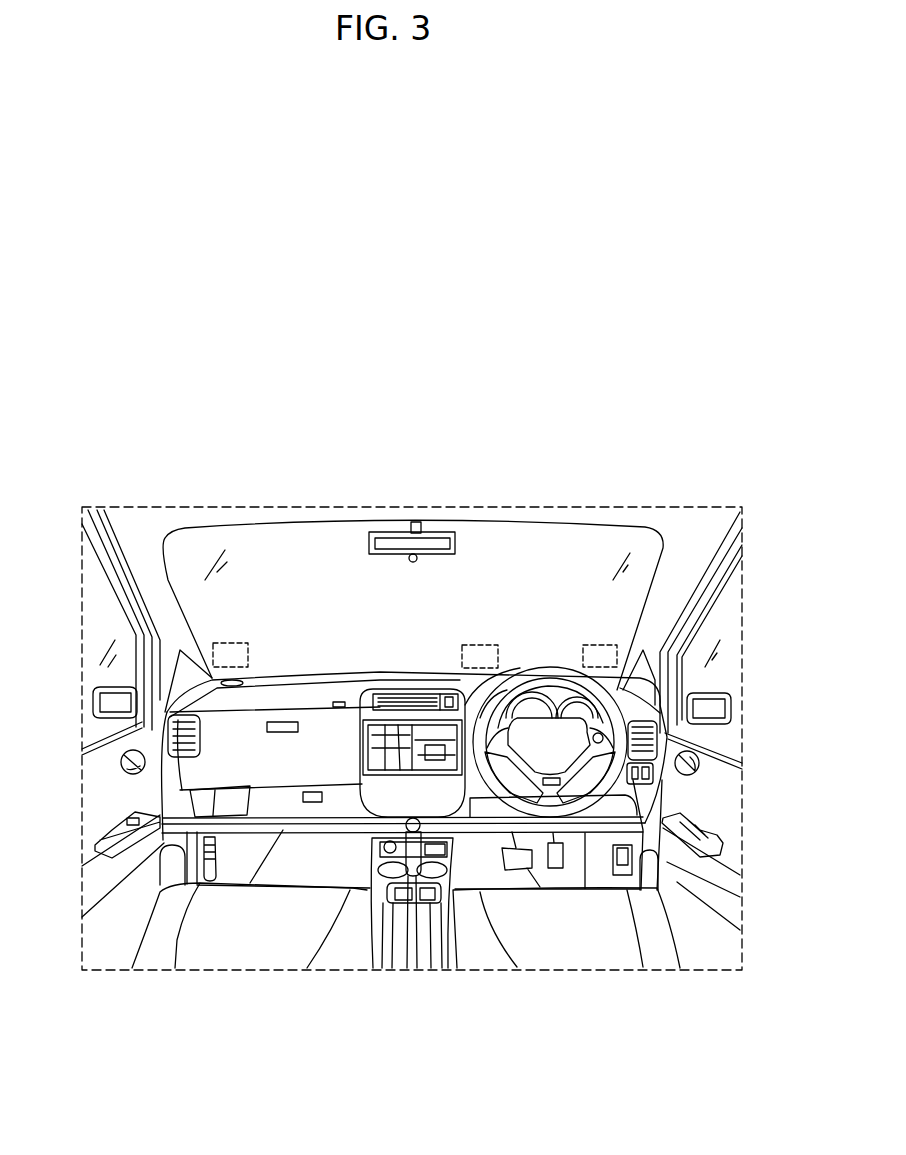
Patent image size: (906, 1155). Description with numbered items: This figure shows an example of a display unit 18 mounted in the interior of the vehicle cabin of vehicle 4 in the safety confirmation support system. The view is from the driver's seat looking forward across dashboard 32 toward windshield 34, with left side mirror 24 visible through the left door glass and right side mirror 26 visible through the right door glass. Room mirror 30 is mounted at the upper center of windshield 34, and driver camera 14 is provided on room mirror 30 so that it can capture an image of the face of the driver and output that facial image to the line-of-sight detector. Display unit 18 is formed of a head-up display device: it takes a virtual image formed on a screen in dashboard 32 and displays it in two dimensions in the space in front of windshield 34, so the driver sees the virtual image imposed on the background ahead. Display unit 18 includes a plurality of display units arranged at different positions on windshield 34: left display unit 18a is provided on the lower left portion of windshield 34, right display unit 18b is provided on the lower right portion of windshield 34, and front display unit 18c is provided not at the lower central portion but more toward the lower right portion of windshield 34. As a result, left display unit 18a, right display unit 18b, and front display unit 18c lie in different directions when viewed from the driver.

The vehicle 4 is at (692, 528).
The driver camera 14 is at (411, 562).
The display unit 18 is at (407, 610).
The left display unit 18a is at (228, 643).
The right display unit 18b is at (600, 645).
The front display unit 18c is at (488, 645).
The left side mirror 24 is at (93, 702).
The right side mirror 26 is at (733, 707).
The room mirror 30 is at (457, 545).
The dashboard 32 is at (325, 678).
The windshield 34 is at (325, 537).